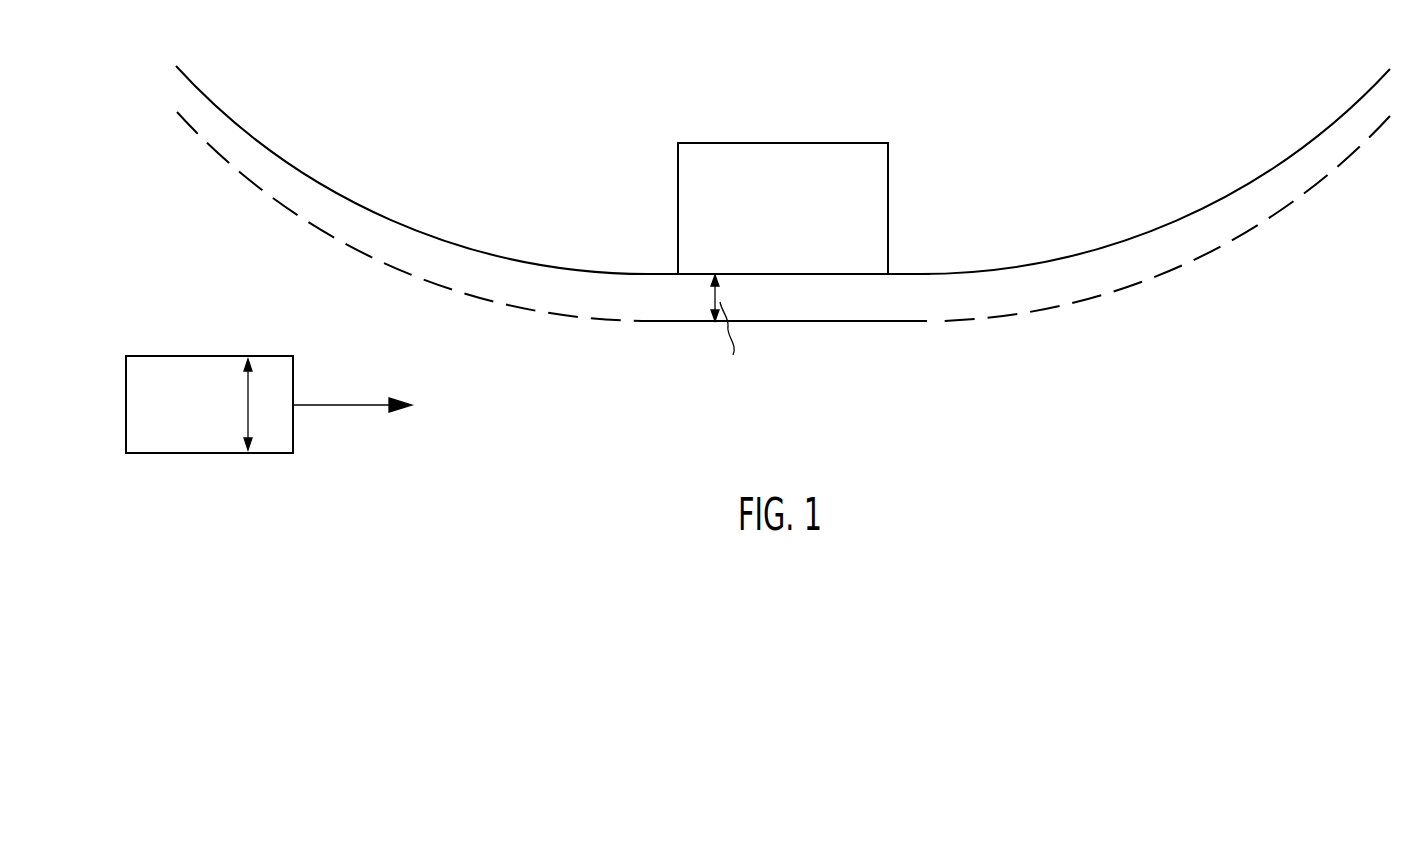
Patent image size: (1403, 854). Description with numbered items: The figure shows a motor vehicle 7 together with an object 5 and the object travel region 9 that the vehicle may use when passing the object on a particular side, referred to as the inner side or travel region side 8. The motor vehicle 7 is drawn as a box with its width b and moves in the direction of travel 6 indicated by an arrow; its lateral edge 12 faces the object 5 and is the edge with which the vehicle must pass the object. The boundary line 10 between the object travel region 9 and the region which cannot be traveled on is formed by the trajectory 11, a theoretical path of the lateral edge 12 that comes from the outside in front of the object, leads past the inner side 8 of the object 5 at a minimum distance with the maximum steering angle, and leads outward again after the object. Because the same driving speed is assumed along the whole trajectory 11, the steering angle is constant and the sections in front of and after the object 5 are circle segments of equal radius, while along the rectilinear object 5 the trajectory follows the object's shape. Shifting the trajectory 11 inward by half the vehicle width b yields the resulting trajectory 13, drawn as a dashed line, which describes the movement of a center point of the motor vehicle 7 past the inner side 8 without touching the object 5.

The object 5 is at (792, 217).
The direction of travel 6 is at (346, 407).
The motor vehicle 7 is at (199, 423).
The inner side (travel region side) 8 is at (848, 291).
The object travel region 9 is at (596, 418).
The boundary line 10 is at (592, 268).
The trajectory 11 is at (507, 253).
The lateral edge 12 is at (227, 348).
The resulting trajectory 13 is at (325, 228).